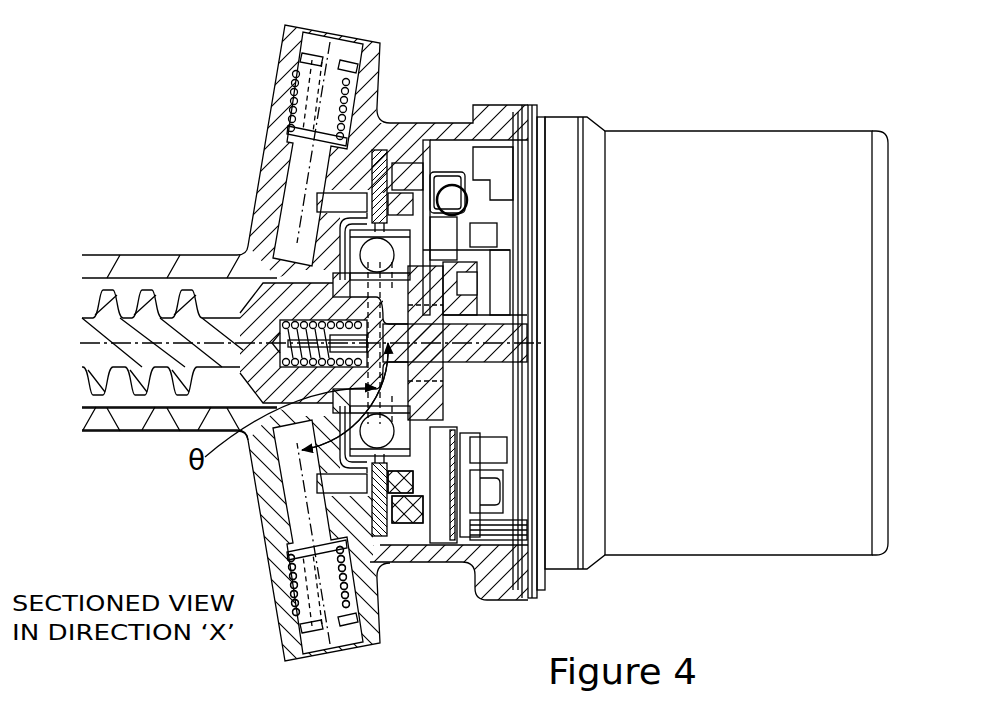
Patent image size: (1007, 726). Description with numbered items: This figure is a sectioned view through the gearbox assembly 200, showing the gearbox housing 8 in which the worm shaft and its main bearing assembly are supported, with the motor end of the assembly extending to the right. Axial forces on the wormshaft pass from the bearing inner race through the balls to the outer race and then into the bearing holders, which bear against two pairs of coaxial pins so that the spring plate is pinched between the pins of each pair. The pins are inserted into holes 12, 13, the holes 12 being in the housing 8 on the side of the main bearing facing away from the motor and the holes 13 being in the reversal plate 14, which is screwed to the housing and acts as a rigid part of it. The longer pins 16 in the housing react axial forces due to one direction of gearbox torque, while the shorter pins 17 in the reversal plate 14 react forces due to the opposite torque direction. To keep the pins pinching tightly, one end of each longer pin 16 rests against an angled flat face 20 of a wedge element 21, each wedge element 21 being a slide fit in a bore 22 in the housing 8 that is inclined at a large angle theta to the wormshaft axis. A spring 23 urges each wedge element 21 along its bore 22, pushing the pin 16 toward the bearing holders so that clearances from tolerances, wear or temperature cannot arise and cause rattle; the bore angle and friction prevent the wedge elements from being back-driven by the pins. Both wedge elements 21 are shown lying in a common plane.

The gearbox housing 8 is at (162, 255).
The hole in the housing 12 is at (346, 507).
The hole in the reversal plate 13 is at (404, 510).
The reversal plate 14 is at (419, 158).
The longer pins 16 is at (340, 197).
The shorter pins 17 is at (406, 196).
The angled flat face 20 is at (303, 213).
The wedge element 21 is at (293, 172).
The bore 22 is at (263, 237).
The spring 23 is at (297, 112).
The gearbox assembly 200 is at (622, 103).